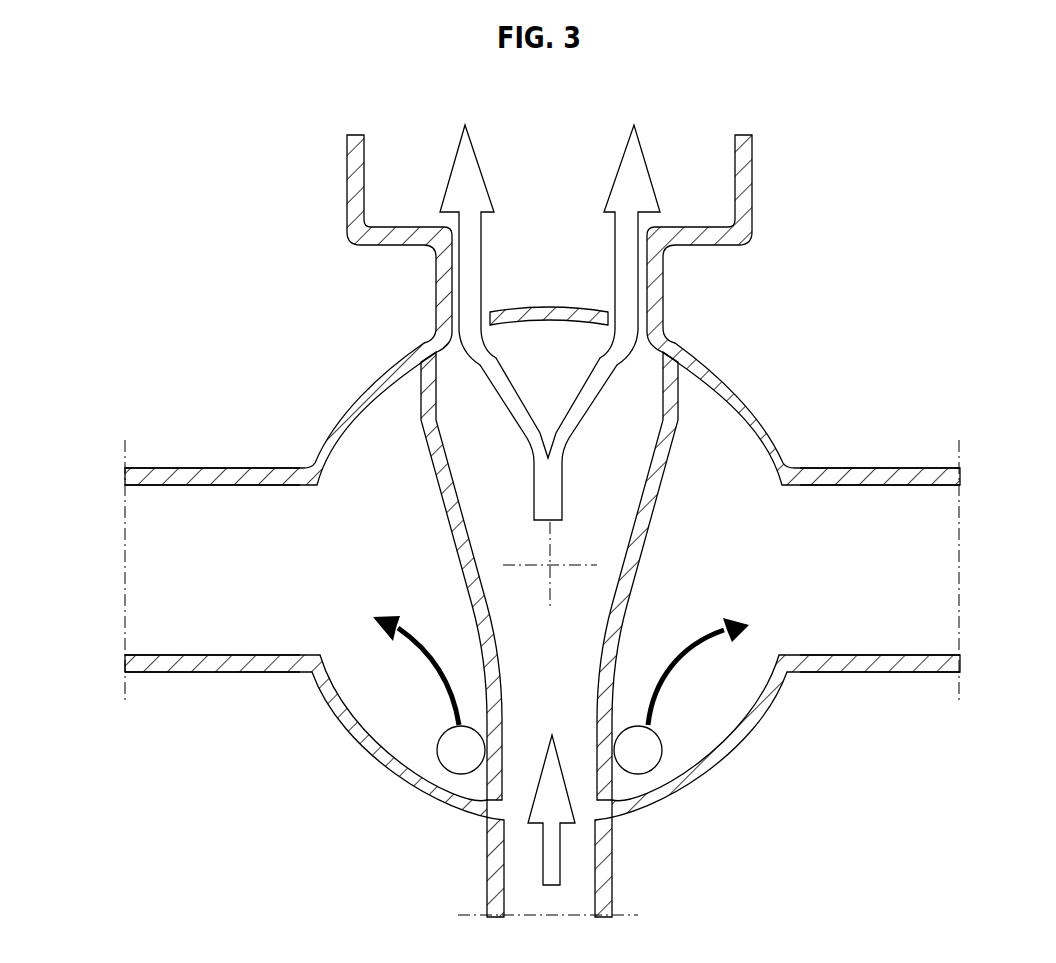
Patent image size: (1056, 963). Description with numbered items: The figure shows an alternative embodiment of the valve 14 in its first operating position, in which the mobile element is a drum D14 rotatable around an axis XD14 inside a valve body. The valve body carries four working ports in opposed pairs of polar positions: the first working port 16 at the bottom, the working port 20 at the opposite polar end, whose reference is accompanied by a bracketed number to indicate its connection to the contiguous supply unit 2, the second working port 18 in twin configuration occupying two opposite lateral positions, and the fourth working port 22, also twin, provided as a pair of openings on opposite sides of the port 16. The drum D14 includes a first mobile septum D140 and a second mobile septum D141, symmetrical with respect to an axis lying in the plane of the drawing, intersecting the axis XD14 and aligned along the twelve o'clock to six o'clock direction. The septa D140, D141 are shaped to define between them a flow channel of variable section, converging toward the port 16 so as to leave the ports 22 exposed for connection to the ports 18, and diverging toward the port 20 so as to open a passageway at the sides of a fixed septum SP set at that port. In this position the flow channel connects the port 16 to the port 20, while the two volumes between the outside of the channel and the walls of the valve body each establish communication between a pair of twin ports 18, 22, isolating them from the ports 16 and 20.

The supply unit 2 is at (702, 150).
The valve 14 is at (246, 234).
The first working port 16 is at (548, 907).
The second working port 18 is at (148, 583).
The working port 20 is at (558, 245).
The fourth working port 22 is at (440, 745).
The fixed septum SP is at (560, 326).
The drum D14 is at (672, 449).
The first mobile septum D140 is at (440, 470).
The second mobile septum D141 is at (628, 588).
The axis XD14 is at (550, 568).